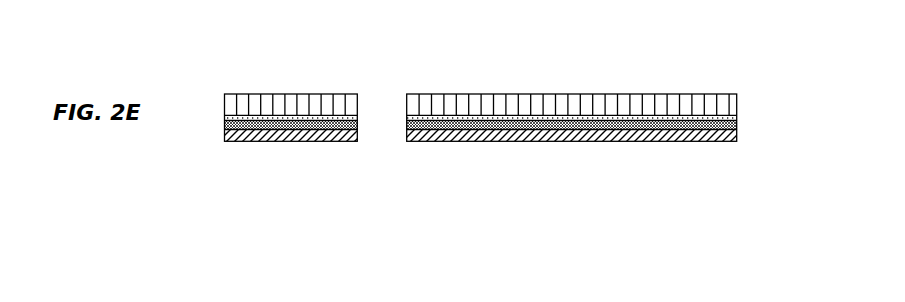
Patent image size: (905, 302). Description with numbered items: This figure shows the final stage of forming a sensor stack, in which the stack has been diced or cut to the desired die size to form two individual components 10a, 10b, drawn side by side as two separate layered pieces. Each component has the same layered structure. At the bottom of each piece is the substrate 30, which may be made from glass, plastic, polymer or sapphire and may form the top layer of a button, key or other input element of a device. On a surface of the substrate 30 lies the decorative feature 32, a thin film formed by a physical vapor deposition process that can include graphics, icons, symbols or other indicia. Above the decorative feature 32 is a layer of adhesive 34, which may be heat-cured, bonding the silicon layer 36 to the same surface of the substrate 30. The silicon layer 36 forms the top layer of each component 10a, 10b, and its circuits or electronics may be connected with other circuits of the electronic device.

The individual component 10a is at (273, 185).
The individual component 10b is at (572, 185).
The substrate 30 is at (357, 149).
The decorative feature 32 is at (357, 127).
The adhesive 34 is at (357, 115).
The silicon layer 36 is at (357, 95).